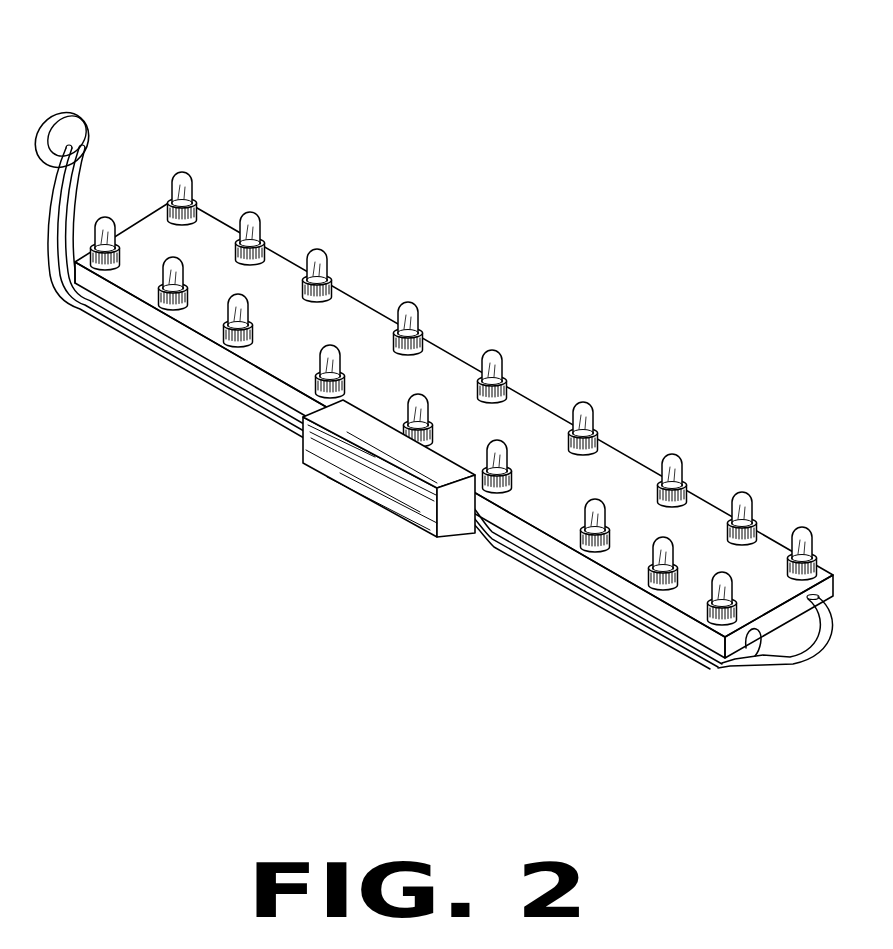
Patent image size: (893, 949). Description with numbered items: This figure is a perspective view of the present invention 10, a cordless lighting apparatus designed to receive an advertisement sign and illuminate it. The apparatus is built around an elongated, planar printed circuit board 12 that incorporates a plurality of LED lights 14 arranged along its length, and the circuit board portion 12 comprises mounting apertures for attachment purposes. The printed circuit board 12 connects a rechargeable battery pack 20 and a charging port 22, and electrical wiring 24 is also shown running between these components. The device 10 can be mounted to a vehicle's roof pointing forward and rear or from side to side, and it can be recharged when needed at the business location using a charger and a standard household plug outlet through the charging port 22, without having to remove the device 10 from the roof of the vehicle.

The present invention 10 is at (738, 360).
The printed circuit board 12 is at (165, 317).
The LED lights 14 is at (602, 513).
The rechargeable battery pack 20 is at (365, 495).
The charging port 22 is at (75, 127).
The electrical wiring 24 is at (733, 664).